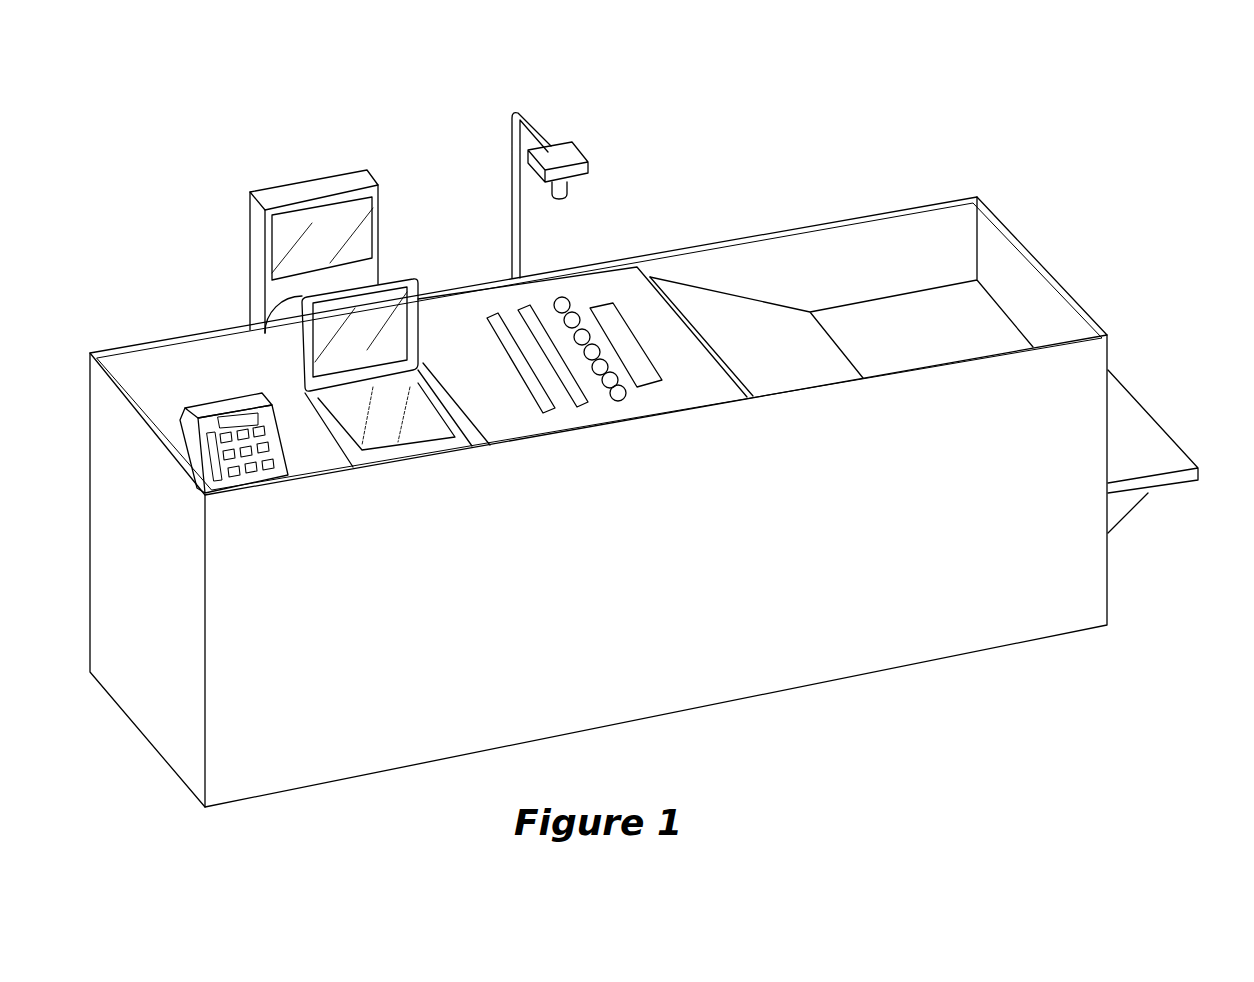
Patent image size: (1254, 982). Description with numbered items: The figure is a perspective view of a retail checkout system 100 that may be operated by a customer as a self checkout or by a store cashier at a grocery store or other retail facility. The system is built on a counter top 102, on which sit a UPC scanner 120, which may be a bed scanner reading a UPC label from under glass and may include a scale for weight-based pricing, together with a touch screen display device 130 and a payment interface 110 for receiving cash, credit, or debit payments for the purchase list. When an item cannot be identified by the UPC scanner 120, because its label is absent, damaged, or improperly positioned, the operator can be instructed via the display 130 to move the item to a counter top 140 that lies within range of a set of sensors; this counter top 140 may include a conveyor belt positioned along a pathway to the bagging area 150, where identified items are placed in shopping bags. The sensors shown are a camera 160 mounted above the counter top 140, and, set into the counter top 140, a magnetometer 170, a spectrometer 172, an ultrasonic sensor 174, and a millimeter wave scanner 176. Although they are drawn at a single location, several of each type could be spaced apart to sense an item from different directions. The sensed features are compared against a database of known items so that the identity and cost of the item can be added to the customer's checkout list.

The retail checkout system 100 is at (629, 444).
The counter top 102 is at (145, 355).
The payment interface 110 is at (188, 452).
The UPC scanner 120 is at (358, 355).
The touch screen display device 130 is at (370, 213).
The counter top 140 is at (585, 351).
The bagging area 150 is at (912, 330).
The camera 160 is at (560, 152).
The magnetometer 170 is at (542, 395).
The spectrometer 172 is at (577, 403).
The ultrasonic sensor 174 is at (617, 400).
The millimeter wave scanner 176 is at (647, 387).